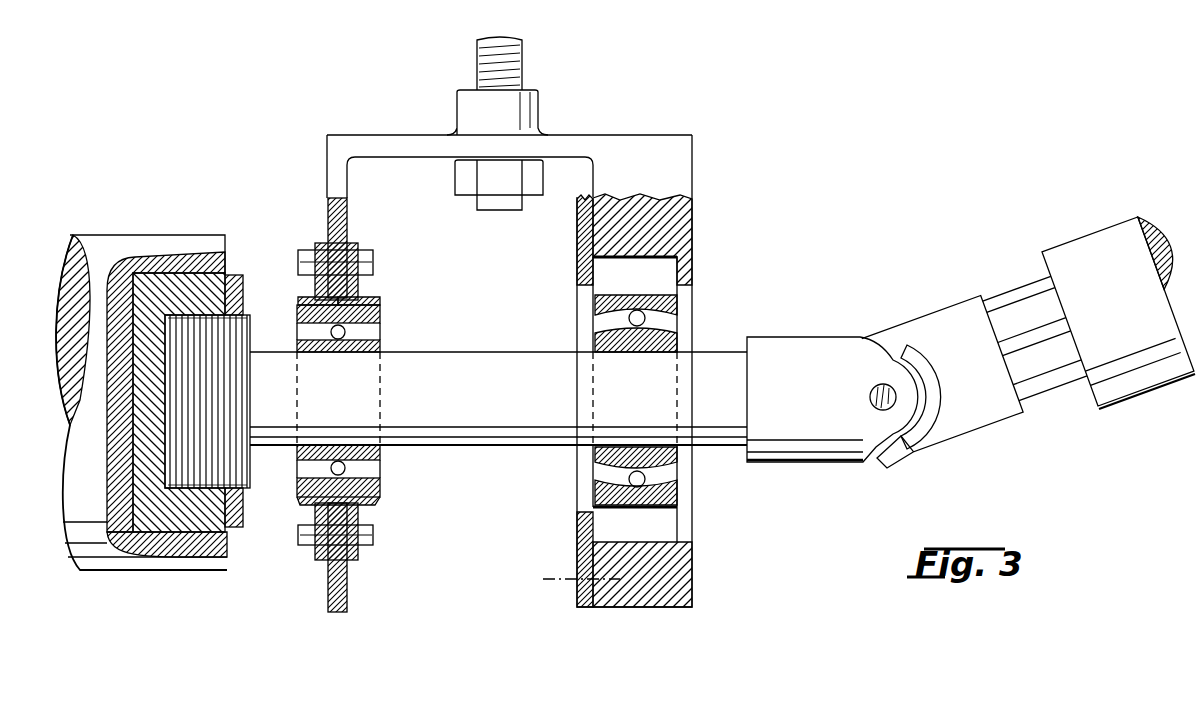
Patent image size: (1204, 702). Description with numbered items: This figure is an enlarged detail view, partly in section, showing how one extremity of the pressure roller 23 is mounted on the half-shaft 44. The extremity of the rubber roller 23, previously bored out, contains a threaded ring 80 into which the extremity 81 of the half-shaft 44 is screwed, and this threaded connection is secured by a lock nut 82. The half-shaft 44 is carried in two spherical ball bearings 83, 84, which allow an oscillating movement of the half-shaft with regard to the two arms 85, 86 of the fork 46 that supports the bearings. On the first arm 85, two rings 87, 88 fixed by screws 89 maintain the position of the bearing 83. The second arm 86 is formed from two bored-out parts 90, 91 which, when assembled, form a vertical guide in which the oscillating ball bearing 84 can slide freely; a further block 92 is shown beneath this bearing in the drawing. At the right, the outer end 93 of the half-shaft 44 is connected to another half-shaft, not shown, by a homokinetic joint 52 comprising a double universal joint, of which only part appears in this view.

The pressure roller 23 is at (110, 250).
The half-shaft 44 is at (487, 452).
The fork 46 is at (604, 148).
The homokinetic joint 52 is at (957, 315).
The threaded ring 80 is at (167, 515).
The extremity of the half-shaft 81 is at (207, 505).
The lock nut 82 is at (240, 530).
The spherical ball bearing 83 is at (372, 470).
The spherical ball bearing 84 is at (600, 460).
The arm 85 is at (332, 180).
The arm 86 is at (688, 166).
The ring 87 is at (299, 302).
The ring 88 is at (380, 300).
The screws 89 is at (373, 266).
The bored out part 90 is at (580, 247).
The bored out part 91 is at (688, 254).
The lower block 92 is at (678, 504).
The outer end of the half-shaft 93 is at (800, 348).